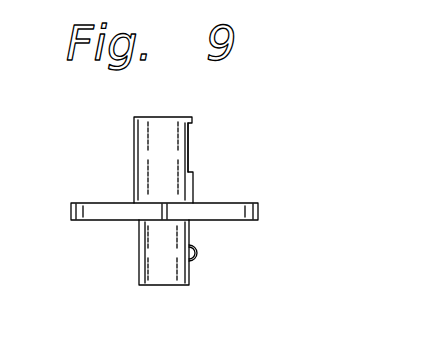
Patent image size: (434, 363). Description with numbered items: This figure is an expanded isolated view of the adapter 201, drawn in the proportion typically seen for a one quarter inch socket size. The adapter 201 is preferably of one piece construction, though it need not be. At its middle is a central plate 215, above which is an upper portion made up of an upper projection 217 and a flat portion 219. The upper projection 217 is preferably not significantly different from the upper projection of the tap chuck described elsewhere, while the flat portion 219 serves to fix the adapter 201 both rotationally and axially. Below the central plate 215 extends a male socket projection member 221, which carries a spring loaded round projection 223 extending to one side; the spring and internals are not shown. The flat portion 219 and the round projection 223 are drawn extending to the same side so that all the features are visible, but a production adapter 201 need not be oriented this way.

The adapter 201 is at (93, 278).
The central plate 215 is at (258, 210).
The upper projection 217 is at (143, 167).
The flat portion 219 is at (188, 143).
The male socket projection member 221 is at (165, 275).
The round projection 223 is at (193, 248).